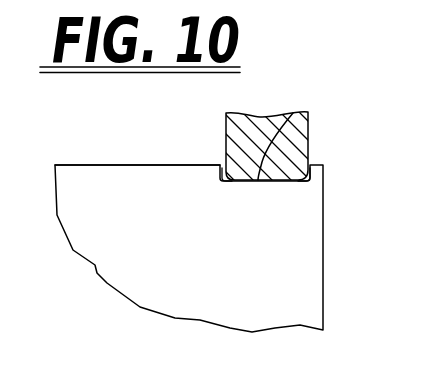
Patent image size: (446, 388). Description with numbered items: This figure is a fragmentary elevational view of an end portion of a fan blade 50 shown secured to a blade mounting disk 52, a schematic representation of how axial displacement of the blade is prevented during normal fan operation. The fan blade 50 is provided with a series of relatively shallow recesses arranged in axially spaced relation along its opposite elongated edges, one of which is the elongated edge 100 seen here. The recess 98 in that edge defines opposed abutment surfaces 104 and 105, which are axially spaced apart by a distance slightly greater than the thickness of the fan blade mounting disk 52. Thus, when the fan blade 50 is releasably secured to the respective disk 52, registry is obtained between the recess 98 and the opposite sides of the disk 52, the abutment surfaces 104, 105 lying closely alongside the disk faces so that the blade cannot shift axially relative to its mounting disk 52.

The fan blade 50 is at (188, 275).
The fan blade mounting disk 52 is at (225, 138).
The recess 98 is at (293, 113).
The elongated edge 100 is at (117, 165).
The abutment surface 104 is at (230, 182).
The abutment surface 105 is at (295, 183).